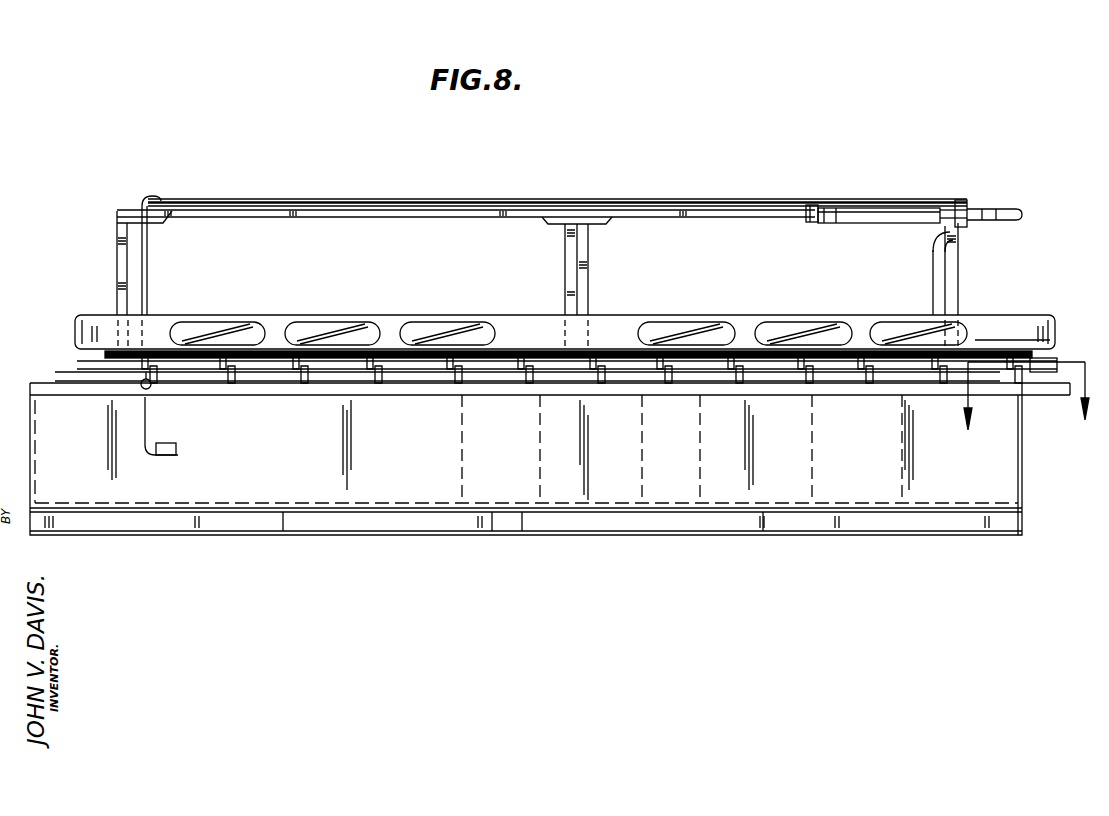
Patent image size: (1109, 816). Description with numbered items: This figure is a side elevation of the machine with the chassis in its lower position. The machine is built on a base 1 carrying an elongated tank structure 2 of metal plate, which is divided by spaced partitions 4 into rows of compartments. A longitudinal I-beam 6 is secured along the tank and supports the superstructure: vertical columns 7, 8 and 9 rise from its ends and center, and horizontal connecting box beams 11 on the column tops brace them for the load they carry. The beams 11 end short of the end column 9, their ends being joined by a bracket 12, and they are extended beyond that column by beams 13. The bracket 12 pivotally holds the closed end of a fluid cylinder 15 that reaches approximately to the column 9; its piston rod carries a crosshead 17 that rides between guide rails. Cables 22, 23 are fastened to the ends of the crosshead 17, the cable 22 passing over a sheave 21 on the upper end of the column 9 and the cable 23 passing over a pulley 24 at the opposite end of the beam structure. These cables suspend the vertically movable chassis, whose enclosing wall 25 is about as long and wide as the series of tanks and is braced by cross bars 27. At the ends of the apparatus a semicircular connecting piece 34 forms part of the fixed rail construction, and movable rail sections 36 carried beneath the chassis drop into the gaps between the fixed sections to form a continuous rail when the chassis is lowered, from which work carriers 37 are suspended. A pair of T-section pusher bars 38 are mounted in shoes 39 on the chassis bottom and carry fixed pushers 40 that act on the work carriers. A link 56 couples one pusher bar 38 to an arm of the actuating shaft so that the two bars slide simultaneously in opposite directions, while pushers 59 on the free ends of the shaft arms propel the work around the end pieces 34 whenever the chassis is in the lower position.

The base 1 is at (630, 522).
The tank structure 2 is at (1000, 490).
The partitions 4 is at (458, 445).
The I-beam 6 is at (138, 377).
The column 7 is at (120, 272).
The column 8 is at (573, 268).
The column 9 is at (946, 270).
The box beams 11 is at (845, 207).
The bracket 12 is at (812, 205).
The beams 13 is at (1005, 210).
The fluid cylinder 15 is at (860, 208).
The crosshead 17 is at (963, 203).
The sheave 21 is at (956, 238).
The cable 22 is at (933, 270).
The cable 23 is at (690, 198).
The pulley 24 is at (150, 200).
The enclosing wall 25 is at (618, 338).
The cross bars 27 is at (330, 333).
The semicircular connecting piece 34 is at (250, 374).
The movable rail sections 36 is at (648, 375).
The work carriers 37 is at (150, 415).
The pusher bars 38 is at (105, 353).
The shoes 39 is at (172, 348).
The fixed pushers 40 is at (368, 376).
The link 56 is at (978, 352).
The pushers 59 is at (1058, 362).